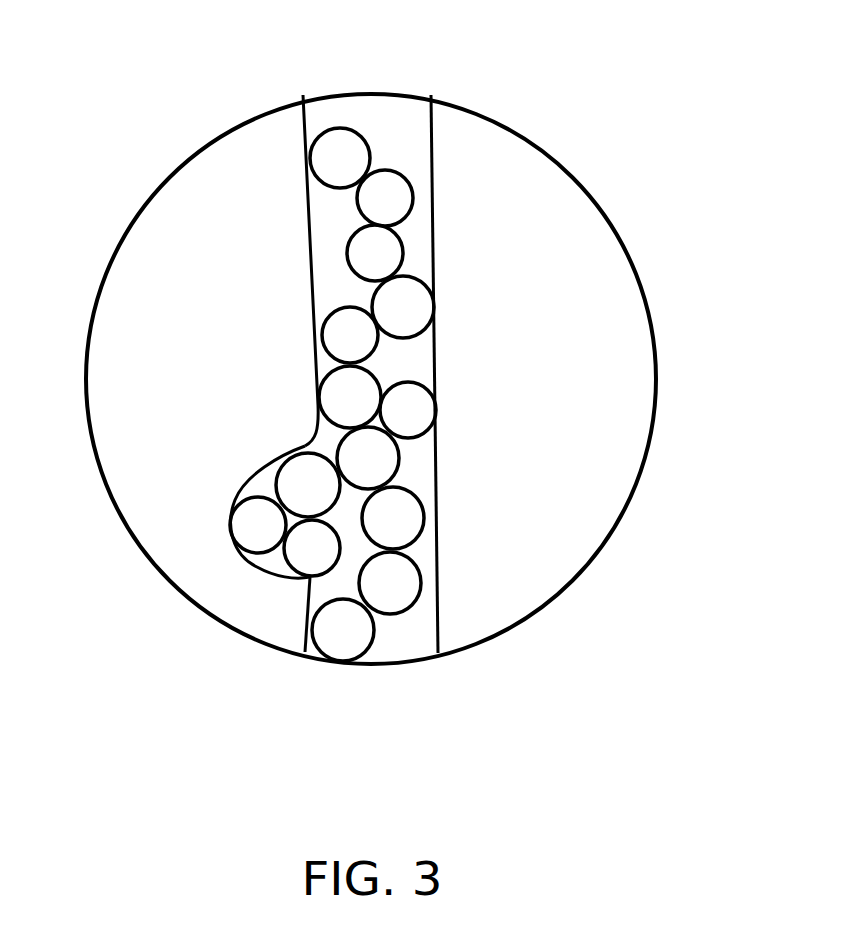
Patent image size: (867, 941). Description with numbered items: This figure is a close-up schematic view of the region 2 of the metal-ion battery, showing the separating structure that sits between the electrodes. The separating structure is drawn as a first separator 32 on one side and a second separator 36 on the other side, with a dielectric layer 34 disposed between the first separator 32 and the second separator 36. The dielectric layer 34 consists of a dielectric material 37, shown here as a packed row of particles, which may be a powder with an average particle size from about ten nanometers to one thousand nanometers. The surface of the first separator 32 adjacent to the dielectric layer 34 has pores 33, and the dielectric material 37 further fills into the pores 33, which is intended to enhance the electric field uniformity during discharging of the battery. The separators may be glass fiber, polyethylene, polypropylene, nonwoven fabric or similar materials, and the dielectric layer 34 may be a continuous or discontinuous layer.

The region 2 is at (657, 42).
The first separator 32 is at (173, 393).
The pores 33 is at (257, 567).
The dielectric layer 34 is at (372, 665).
The second separator 36 is at (518, 393).
The dielectric material 37 is at (340, 128).